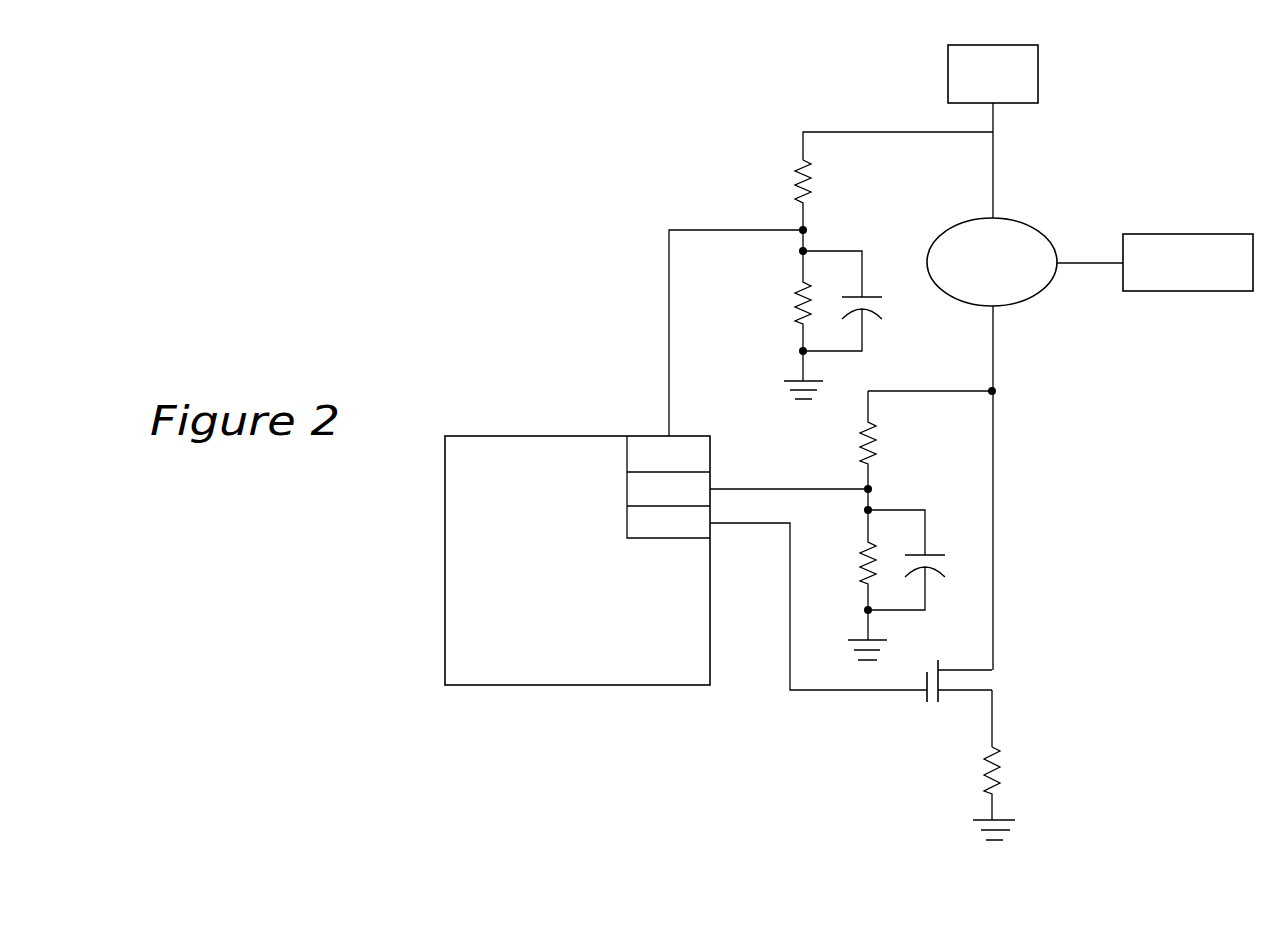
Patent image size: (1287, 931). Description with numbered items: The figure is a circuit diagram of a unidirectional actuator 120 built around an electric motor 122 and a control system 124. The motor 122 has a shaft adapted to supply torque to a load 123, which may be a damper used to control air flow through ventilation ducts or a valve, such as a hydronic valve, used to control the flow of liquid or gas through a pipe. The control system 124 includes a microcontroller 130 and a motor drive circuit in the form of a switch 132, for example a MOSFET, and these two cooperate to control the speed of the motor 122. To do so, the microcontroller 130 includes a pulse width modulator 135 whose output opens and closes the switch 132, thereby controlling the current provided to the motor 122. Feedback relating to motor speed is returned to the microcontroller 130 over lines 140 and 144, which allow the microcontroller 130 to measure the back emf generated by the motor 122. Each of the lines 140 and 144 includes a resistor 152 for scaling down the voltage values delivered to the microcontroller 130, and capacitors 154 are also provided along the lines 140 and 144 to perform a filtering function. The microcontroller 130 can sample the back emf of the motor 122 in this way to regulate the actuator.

The unidirectional actuator 120 is at (645, 105).
The electric motor 122 is at (1052, 214).
The load 123 is at (1188, 234).
The control system 124 is at (730, 710).
The microcontroller 130 is at (563, 686).
The switch 132 is at (912, 710).
The pulse width modulator 135 is at (627, 525).
The line 140 is at (669, 333).
The line 144 is at (899, 391).
The resistor 152 is at (800, 183).
The capacitor 154 is at (874, 275).